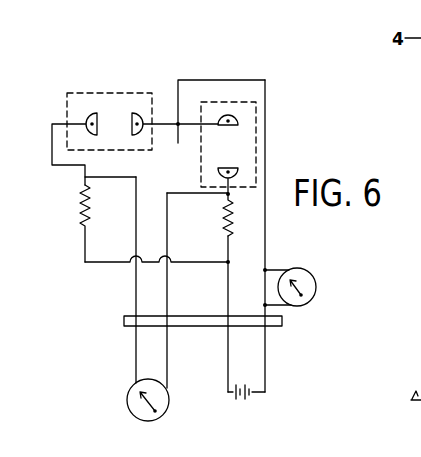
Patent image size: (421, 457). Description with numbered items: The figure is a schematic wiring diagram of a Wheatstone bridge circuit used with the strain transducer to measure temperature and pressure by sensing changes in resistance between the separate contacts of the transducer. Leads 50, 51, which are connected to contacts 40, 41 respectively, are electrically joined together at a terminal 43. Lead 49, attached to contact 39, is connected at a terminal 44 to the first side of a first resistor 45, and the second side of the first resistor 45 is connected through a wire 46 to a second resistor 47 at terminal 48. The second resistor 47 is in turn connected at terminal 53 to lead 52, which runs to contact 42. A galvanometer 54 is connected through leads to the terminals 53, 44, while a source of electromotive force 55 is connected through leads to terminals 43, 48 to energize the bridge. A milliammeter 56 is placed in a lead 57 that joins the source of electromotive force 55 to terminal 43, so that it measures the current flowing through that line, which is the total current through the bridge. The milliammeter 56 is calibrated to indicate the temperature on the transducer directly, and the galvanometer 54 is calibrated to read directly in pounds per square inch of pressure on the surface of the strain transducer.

The contact 39 is at (101, 120).
The contact 40 is at (133, 123).
The contact 41 is at (238, 122).
The contact 42 is at (240, 167).
The terminal 43 is at (178, 144).
The terminal 44 is at (85, 180).
The first resistor 45 is at (80, 213).
The wire 46 is at (124, 263).
The second resistor 47 is at (225, 216).
The terminal 48 is at (228, 263).
The lead 49 is at (63, 124).
The lead 50 is at (166, 124).
The lead 51 is at (197, 122).
The lead 52 is at (226, 184).
The terminal 53 is at (231, 197).
The galvanometer 54 is at (129, 390).
The source of electromotive force 55 is at (136, 222).
The milliammeter 56 is at (168, 237).
The lead 57 is at (265, 256).